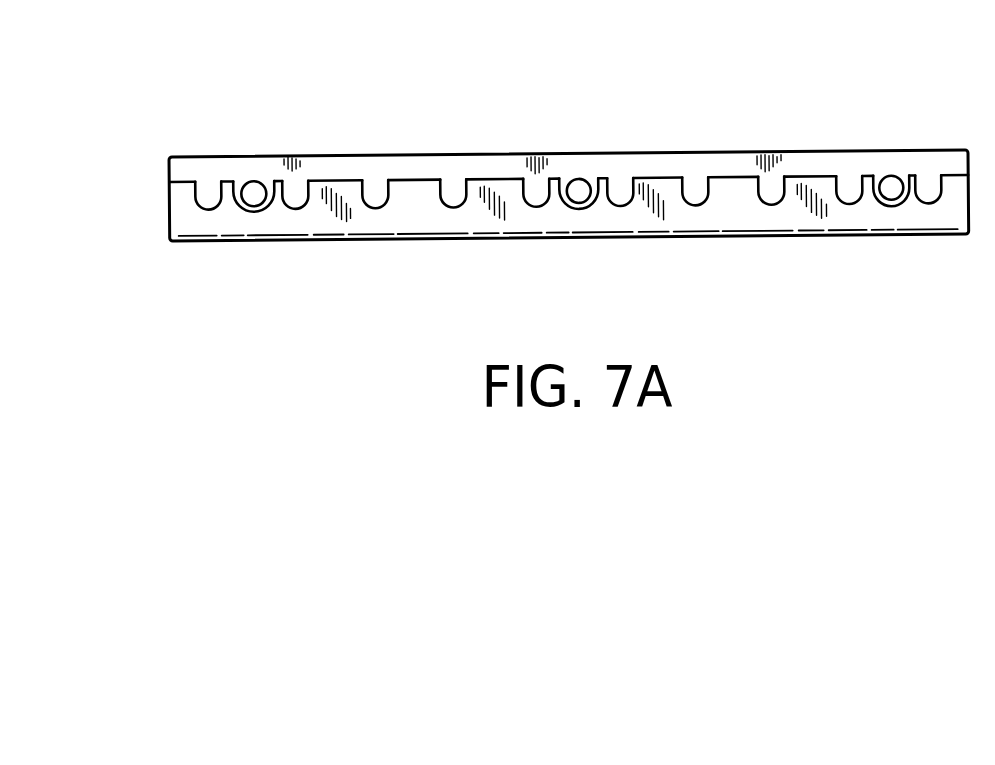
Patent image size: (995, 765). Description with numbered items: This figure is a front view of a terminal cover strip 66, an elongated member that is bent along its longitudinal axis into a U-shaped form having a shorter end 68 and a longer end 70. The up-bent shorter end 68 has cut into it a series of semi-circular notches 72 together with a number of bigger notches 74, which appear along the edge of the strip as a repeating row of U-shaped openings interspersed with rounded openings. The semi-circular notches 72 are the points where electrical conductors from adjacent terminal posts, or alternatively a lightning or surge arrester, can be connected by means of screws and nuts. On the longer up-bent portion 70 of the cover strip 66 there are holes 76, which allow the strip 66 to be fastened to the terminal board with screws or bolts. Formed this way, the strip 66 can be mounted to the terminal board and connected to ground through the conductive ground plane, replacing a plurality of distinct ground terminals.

The terminal cover strip 66 is at (691, 78).
The shorter end 68 is at (182, 212).
The longer end 70 is at (207, 157).
The semi-circular notches 72 is at (385, 192).
The bigger notches 74 is at (579, 181).
The holes 76 is at (240, 212).